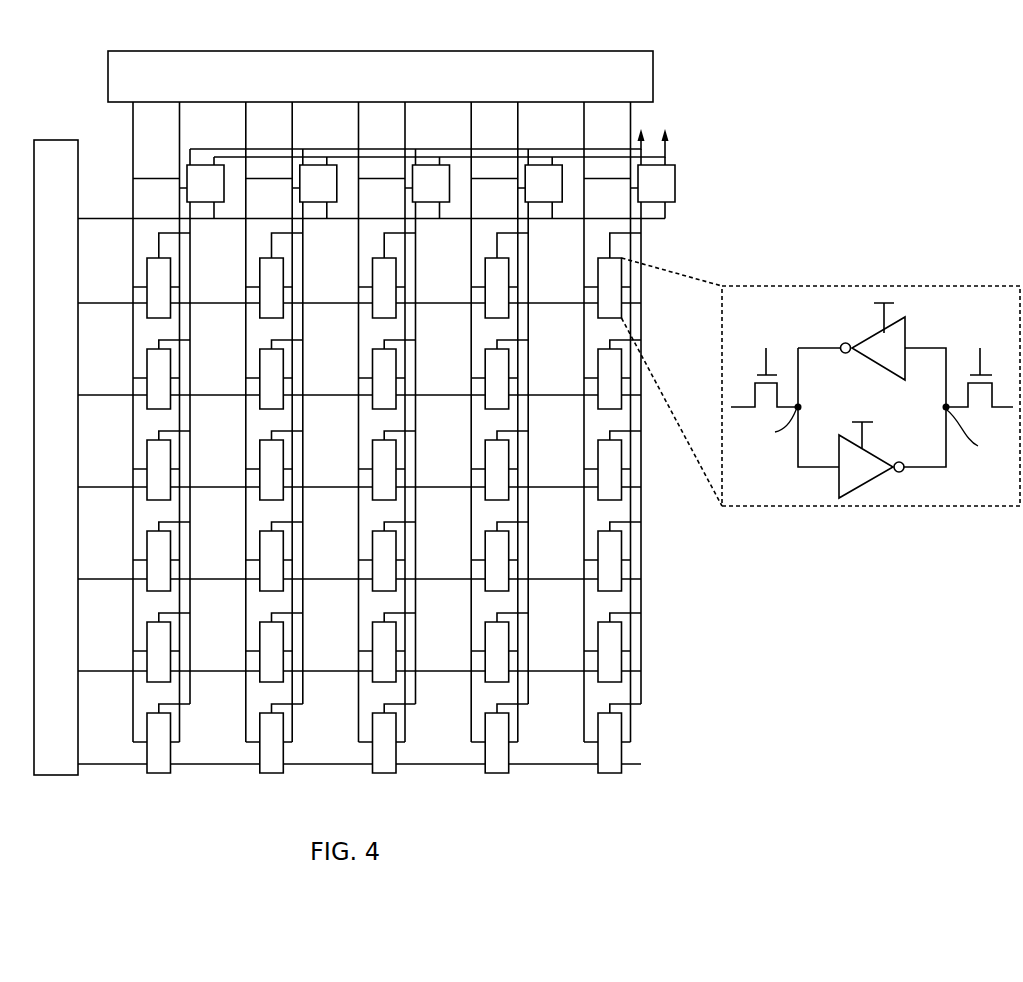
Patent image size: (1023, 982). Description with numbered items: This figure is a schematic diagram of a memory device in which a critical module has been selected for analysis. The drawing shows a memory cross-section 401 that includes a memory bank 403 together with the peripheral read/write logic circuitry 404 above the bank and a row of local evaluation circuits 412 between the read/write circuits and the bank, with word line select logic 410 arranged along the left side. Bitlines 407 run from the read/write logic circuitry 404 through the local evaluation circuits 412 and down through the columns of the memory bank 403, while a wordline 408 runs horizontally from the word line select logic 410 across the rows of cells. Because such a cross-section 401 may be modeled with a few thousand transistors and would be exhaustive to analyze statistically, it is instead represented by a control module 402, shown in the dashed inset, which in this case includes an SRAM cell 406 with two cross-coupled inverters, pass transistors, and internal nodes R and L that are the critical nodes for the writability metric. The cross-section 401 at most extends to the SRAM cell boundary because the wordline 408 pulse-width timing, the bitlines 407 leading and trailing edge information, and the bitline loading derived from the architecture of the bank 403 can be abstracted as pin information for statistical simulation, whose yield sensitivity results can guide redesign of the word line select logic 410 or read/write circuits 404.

The memory cross-section 401 is at (336, 33).
The control module 402 is at (821, 381).
The memory bank 403 is at (453, 780).
The read/write logic circuitry 404 is at (653, 82).
The SRAM cell 406 is at (925, 486).
The bitlines 407 is at (584, 138).
The wordline 408 is at (115, 301).
The word line select logic 410 is at (56, 776).
The local evaluation circuits 412 is at (675, 183).